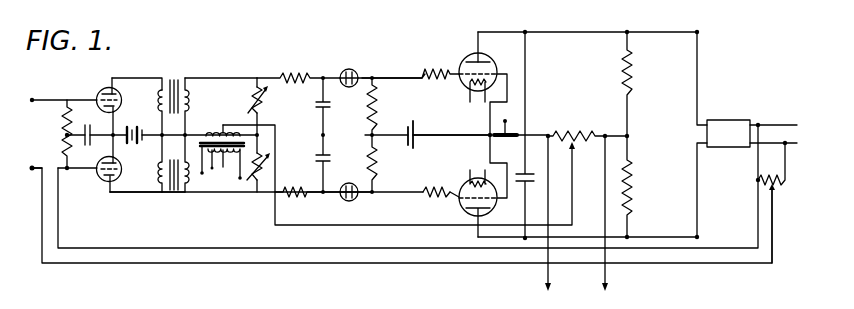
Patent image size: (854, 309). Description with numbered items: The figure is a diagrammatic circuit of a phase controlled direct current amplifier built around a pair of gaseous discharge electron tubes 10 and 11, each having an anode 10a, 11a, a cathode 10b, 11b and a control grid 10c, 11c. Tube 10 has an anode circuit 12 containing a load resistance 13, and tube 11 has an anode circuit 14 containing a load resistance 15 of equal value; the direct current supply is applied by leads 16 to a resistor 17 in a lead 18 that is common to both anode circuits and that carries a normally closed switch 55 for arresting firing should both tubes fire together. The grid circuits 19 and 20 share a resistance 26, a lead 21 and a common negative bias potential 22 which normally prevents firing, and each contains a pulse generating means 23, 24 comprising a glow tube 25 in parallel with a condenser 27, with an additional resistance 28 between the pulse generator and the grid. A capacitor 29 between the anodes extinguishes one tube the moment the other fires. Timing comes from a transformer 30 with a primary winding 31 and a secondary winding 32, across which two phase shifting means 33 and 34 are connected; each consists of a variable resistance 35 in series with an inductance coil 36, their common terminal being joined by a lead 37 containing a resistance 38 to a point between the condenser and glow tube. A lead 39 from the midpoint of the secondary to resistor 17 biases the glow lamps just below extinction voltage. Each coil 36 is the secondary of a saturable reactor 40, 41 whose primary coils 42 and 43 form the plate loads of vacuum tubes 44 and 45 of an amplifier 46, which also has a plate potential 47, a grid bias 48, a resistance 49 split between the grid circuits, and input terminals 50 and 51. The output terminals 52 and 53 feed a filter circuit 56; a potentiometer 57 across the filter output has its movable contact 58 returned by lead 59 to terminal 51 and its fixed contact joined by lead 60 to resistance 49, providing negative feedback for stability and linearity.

The electron tube 10 is at (471, 53).
The anode 10a is at (484, 60).
The cathode 10b is at (469, 94).
The control grid 10c is at (467, 70).
The electron tube 11 is at (458, 199).
The anode 11a is at (466, 211).
The cathode 11b is at (468, 180).
The control grid 11c is at (460, 190).
The anode circuit 12 is at (600, 37).
The load device 13 is at (636, 70).
The anode circuit 14 is at (588, 231).
The load device 15 is at (633, 190).
The leads 16 is at (603, 273).
The resistor 17 is at (573, 128).
The lead 18 is at (535, 131).
The grid circuit 19 is at (382, 82).
The grid circuit 20 is at (382, 183).
The lead 21 is at (419, 135).
The negative bias potential 22 is at (410, 123).
The pulse generating means 23 is at (338, 67).
The pulse generating means 24 is at (325, 198).
The glow tube 25 is at (357, 66).
The resistance 26 is at (366, 105).
The condenser 27 is at (314, 110).
The resistance 28 is at (432, 74).
The capacitor 29 is at (532, 135).
The transformer 30 is at (243, 178).
The primary winding 31 is at (222, 169).
The secondary winding 32 is at (204, 132).
The phase shifting means 33 is at (218, 75).
The phase shifting means 34 is at (212, 197).
The variable resistance 35 is at (262, 100).
The inductance coil 36 is at (192, 92).
The lead 37 is at (258, 75).
The resistance 38 is at (295, 72).
The lead 39 is at (353, 226).
The saturable reactor 40 is at (178, 73).
The saturable reactor 41 is at (180, 197).
The coil 42 is at (158, 91).
The coil 43 is at (160, 172).
The vacuum tube 44 is at (102, 88).
The vacuum tube 45 is at (102, 181).
The amplifier 46 is at (125, 195).
The direct current potential 47 is at (139, 126).
The negative grid bias potential 48 is at (88, 146).
The resistance 49 is at (62, 133).
The signal input terminal 50 is at (32, 98).
The signal input terminal 51 is at (32, 166).
The output terminal 52 is at (700, 32).
The output terminal 53 is at (699, 237).
The switch 55 is at (505, 143).
The filter circuit 56 is at (730, 148).
The potentiometer 57 is at (756, 181).
The movable contact 58 is at (769, 190).
The lead 59 is at (70, 265).
The lead 60 is at (755, 217).